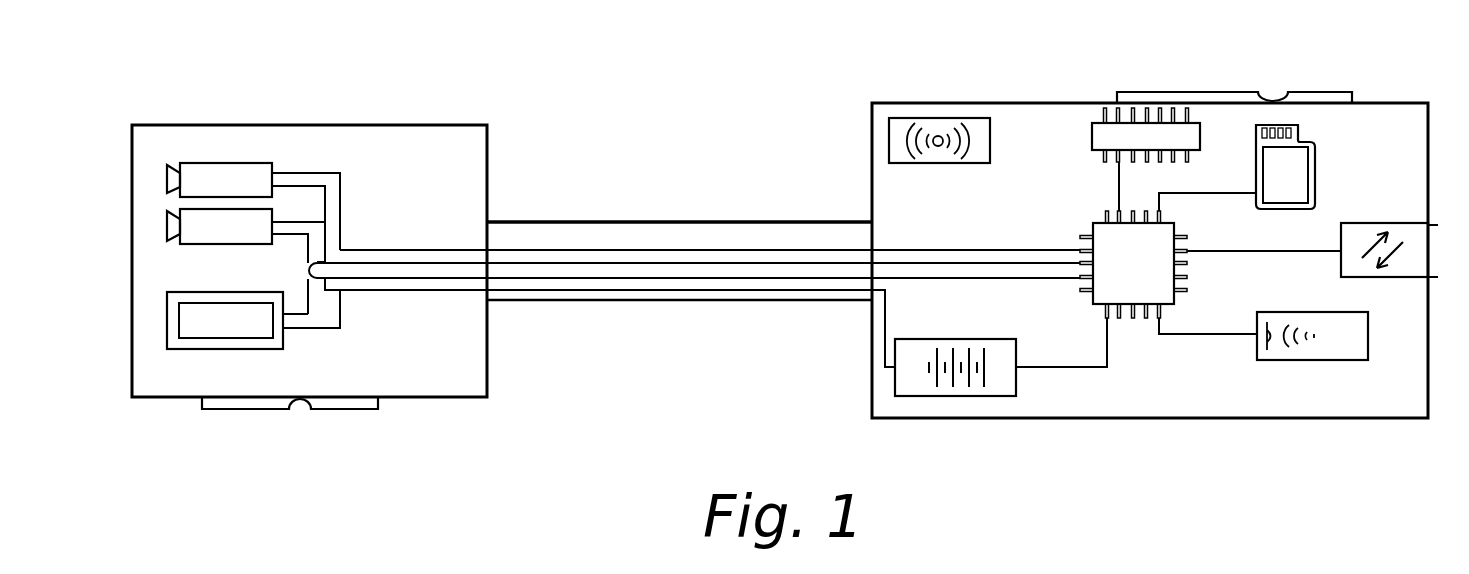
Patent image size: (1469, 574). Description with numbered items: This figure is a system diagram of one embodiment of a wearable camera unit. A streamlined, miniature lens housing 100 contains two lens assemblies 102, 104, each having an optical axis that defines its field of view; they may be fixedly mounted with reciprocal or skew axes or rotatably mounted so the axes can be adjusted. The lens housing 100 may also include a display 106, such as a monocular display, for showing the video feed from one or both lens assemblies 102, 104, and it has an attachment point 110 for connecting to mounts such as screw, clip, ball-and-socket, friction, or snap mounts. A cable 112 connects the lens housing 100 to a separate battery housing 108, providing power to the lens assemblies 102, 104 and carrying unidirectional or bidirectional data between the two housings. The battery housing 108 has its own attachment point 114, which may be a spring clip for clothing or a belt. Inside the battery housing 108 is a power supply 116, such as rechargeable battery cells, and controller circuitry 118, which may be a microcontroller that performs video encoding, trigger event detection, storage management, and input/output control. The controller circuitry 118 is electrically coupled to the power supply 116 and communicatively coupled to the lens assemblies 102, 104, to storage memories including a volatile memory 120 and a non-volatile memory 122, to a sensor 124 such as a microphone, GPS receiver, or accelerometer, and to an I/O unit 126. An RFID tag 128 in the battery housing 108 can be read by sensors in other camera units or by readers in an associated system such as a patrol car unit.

The lens housing 100 is at (323, 127).
The lens assembly 102 is at (212, 167).
The lens assembly 104 is at (198, 238).
The display 106 is at (185, 350).
The battery housing 108 is at (935, 103).
The attachment point 110 is at (330, 405).
The cable 112 is at (597, 225).
The attachment point 114 is at (1320, 96).
The power supply 116 is at (998, 393).
The controller circuitry 118 is at (1092, 223).
The volatile memory 120 is at (1090, 128).
The non-volatile memory 122 is at (1315, 163).
The sensor 124 is at (1338, 356).
The I/O unit 126 is at (1342, 260).
The RFID tag 128 is at (889, 130).